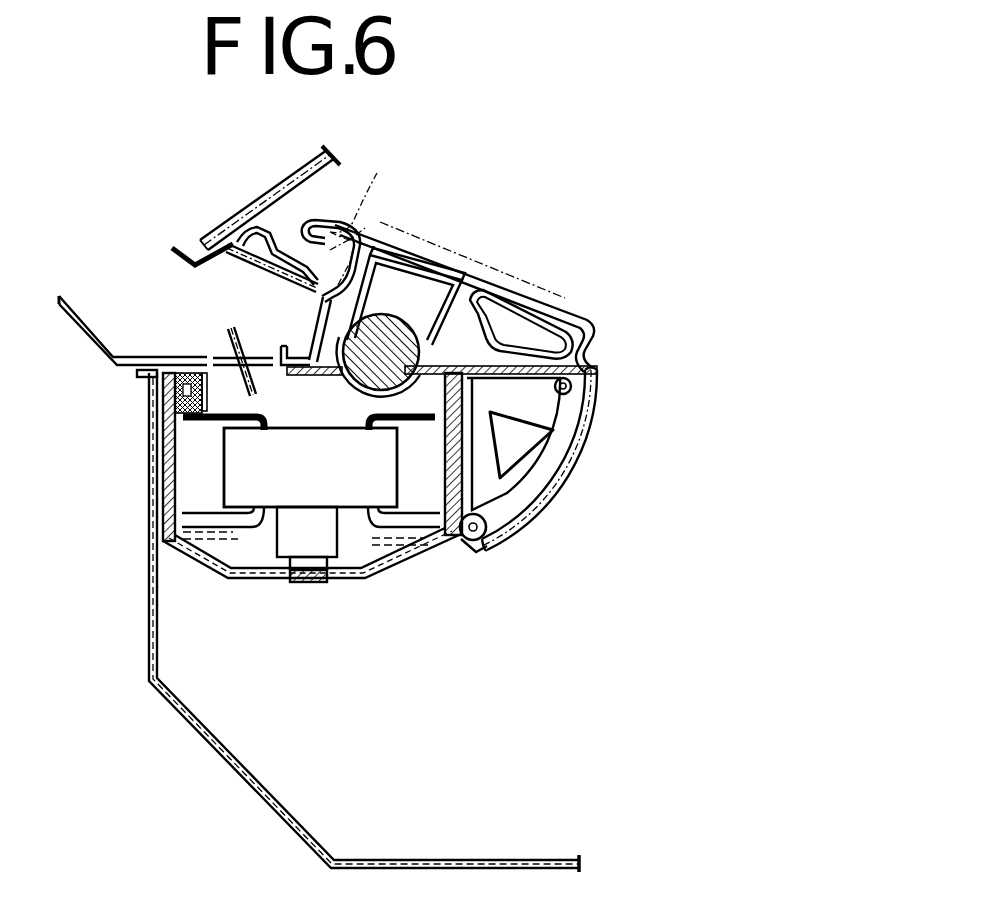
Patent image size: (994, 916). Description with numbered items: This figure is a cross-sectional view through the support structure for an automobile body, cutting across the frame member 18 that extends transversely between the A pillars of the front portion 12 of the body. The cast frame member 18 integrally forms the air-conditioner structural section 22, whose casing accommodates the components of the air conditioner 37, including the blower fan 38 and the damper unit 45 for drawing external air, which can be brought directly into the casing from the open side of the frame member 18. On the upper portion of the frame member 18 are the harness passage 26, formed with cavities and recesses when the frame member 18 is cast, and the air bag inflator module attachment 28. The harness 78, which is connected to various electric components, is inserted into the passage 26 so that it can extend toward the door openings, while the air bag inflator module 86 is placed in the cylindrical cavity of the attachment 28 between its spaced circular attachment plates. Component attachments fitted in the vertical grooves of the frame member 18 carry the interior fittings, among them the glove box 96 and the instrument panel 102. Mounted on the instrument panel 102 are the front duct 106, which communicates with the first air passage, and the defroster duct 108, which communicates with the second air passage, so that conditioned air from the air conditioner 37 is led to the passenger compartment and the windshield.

The front portion 12 is at (240, 781).
The frame member 18 is at (163, 358).
The air-conditioner structural section 22 is at (460, 560).
The harness passage 26 is at (185, 430).
The air bag inflator module attachment 28 is at (350, 395).
The air conditioner 37 is at (275, 596).
The blower fan 38 is at (353, 493).
The damper unit for drawing external air 45 is at (227, 357).
The harness 78 is at (150, 394).
The air bag inflator module 86 is at (420, 277).
The glove box 96 is at (590, 455).
The instrument panel 102 is at (527, 271).
The front duct 106 is at (565, 302).
The defroster duct 108 is at (374, 176).